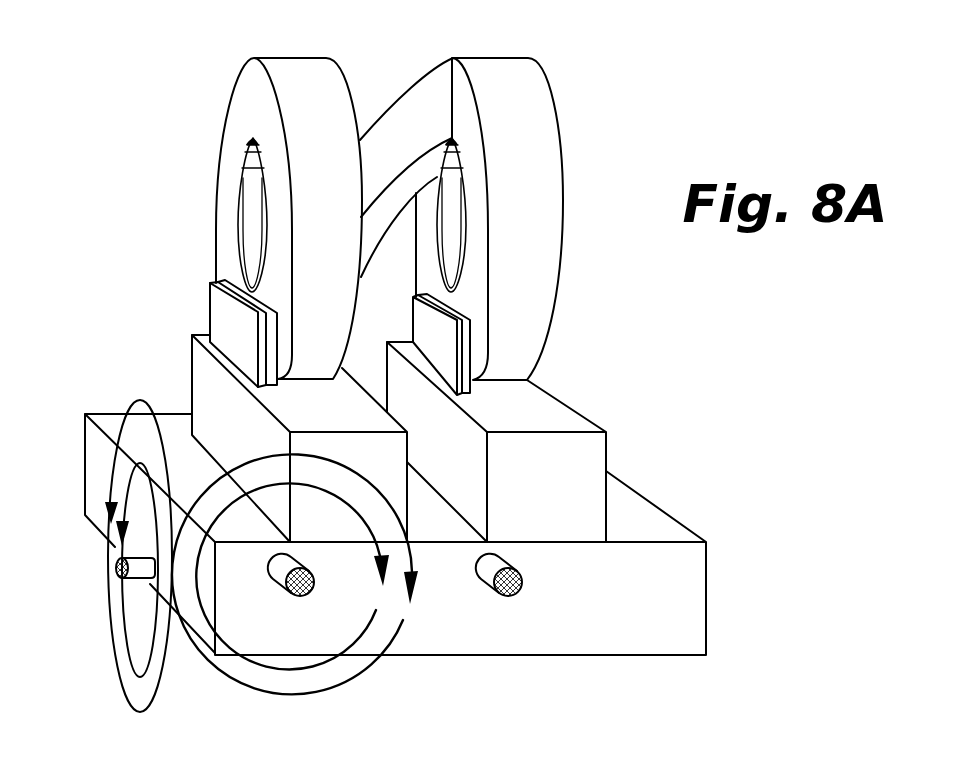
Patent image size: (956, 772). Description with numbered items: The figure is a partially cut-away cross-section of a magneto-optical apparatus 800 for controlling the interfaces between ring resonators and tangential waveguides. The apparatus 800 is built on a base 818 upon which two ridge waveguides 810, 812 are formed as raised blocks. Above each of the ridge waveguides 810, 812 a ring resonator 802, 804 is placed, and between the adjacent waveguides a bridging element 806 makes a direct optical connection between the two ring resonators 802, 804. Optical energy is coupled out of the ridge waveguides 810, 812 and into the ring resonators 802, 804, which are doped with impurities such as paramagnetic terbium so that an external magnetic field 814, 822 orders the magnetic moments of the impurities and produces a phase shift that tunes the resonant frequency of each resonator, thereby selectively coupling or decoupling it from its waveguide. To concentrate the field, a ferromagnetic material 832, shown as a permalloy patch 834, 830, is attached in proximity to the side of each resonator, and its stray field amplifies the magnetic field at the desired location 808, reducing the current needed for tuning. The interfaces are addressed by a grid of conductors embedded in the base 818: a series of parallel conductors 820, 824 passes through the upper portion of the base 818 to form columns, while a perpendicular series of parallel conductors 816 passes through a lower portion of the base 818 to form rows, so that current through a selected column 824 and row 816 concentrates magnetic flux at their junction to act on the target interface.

The magneto-optical apparatus 800 is at (127, 64).
The ring resonator 802 is at (243, 112).
The ring resonator 804 is at (535, 98).
The bridging element 806 is at (418, 85).
The desired location 808 is at (217, 303).
The ridge waveguide 810 is at (550, 402).
The ridge waveguide 812 is at (203, 417).
The external magnetic field 814 is at (125, 697).
The parallel conductors 816 is at (118, 570).
The base 818 is at (690, 580).
The parallel conductor 820 is at (518, 588).
The external magnetic field 822 is at (367, 661).
The parallel conductor 824 is at (288, 597).
The permalloy patch 830 is at (466, 325).
The ferromagnetic material 832 is at (262, 342).
The permalloy patch 834 is at (272, 367).